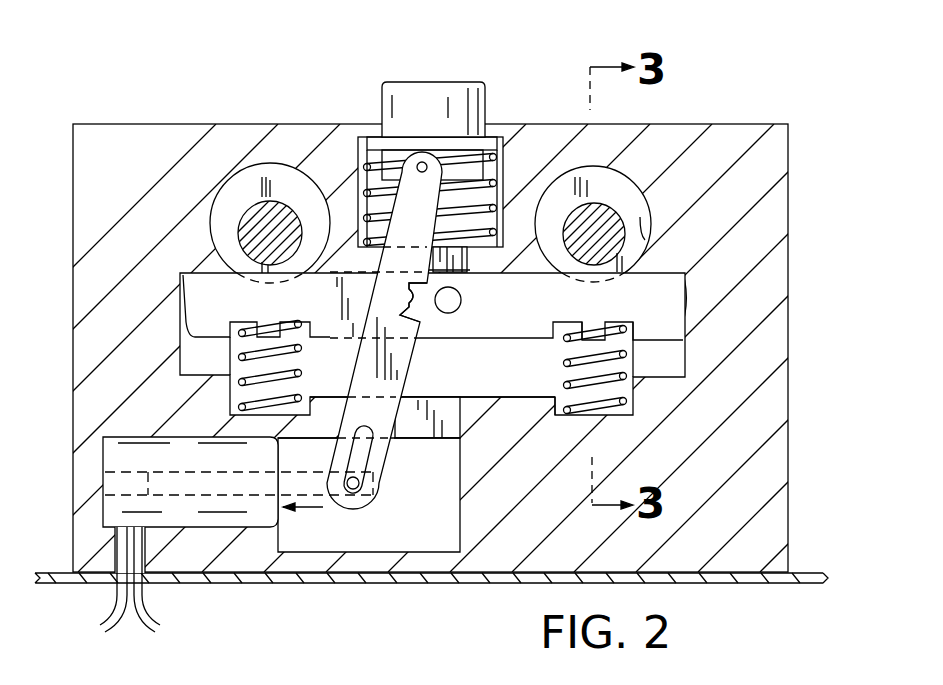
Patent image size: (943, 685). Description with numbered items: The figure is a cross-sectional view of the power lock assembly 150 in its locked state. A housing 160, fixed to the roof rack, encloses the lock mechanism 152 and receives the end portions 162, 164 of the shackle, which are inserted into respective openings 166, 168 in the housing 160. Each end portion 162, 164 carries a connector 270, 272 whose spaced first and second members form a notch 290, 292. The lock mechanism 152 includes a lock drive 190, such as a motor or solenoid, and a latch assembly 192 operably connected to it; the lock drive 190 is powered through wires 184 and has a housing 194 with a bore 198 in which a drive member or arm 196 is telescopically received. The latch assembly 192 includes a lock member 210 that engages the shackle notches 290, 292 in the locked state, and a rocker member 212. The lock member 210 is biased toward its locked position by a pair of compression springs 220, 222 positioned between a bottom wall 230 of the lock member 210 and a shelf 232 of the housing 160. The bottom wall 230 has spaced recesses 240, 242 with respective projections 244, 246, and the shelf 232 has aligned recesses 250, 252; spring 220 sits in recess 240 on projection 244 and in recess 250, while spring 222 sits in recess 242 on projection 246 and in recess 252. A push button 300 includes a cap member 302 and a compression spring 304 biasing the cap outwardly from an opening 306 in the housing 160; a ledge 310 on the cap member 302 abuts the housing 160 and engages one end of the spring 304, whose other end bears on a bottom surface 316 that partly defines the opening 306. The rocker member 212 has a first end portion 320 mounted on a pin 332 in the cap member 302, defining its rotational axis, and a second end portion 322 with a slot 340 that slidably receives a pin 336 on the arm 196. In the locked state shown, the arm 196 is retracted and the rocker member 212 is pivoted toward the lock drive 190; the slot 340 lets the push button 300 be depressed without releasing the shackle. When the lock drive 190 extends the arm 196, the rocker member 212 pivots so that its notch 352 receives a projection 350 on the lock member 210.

The power lock assembly 150 is at (155, 102).
The lock mechanism 152 is at (160, 337).
The housing 160 is at (773, 160).
The shackle end portion 162 is at (243, 177).
The shackle end portion 164 is at (643, 198).
The opening 166 is at (220, 212).
The opening 168 is at (648, 215).
The wires 184 is at (112, 625).
The lock drive 190 is at (105, 515).
The latch assembly 192 is at (500, 400).
The housing 194 is at (237, 518).
The drive member or arm 196 is at (307, 487).
The bore 198 is at (132, 473).
The lock member 210 is at (492, 336).
The rocker member 212 is at (400, 455).
The compression spring 220 is at (238, 345).
The compression spring 222 is at (640, 350).
The bottom wall 230 is at (511, 341).
The shelf 232 is at (568, 400).
The recess 240 is at (230, 322).
The recess 242 is at (690, 320).
The projection 244 is at (267, 328).
The projection 246 is at (683, 278).
The recess 250 is at (190, 398).
The recess 252 is at (640, 400).
The connector 270 is at (270, 160).
The connector 272 is at (645, 215).
The notch 290 is at (242, 208).
The notch 292 is at (690, 262).
The push button 300 is at (472, 77).
The cap member 302 is at (402, 88).
The compression spring 304 is at (362, 165).
The opening 306 is at (505, 175).
The ledge 310 is at (372, 150).
The bottom surface 316 is at (627, 190).
The first end portion 320 is at (407, 160).
The second end portion 322 is at (462, 497).
The pin 332 is at (427, 160).
The pin 336 is at (355, 492).
The slot 340 is at (363, 457).
The projection 350 is at (461, 300).
The notch 352 is at (408, 300).